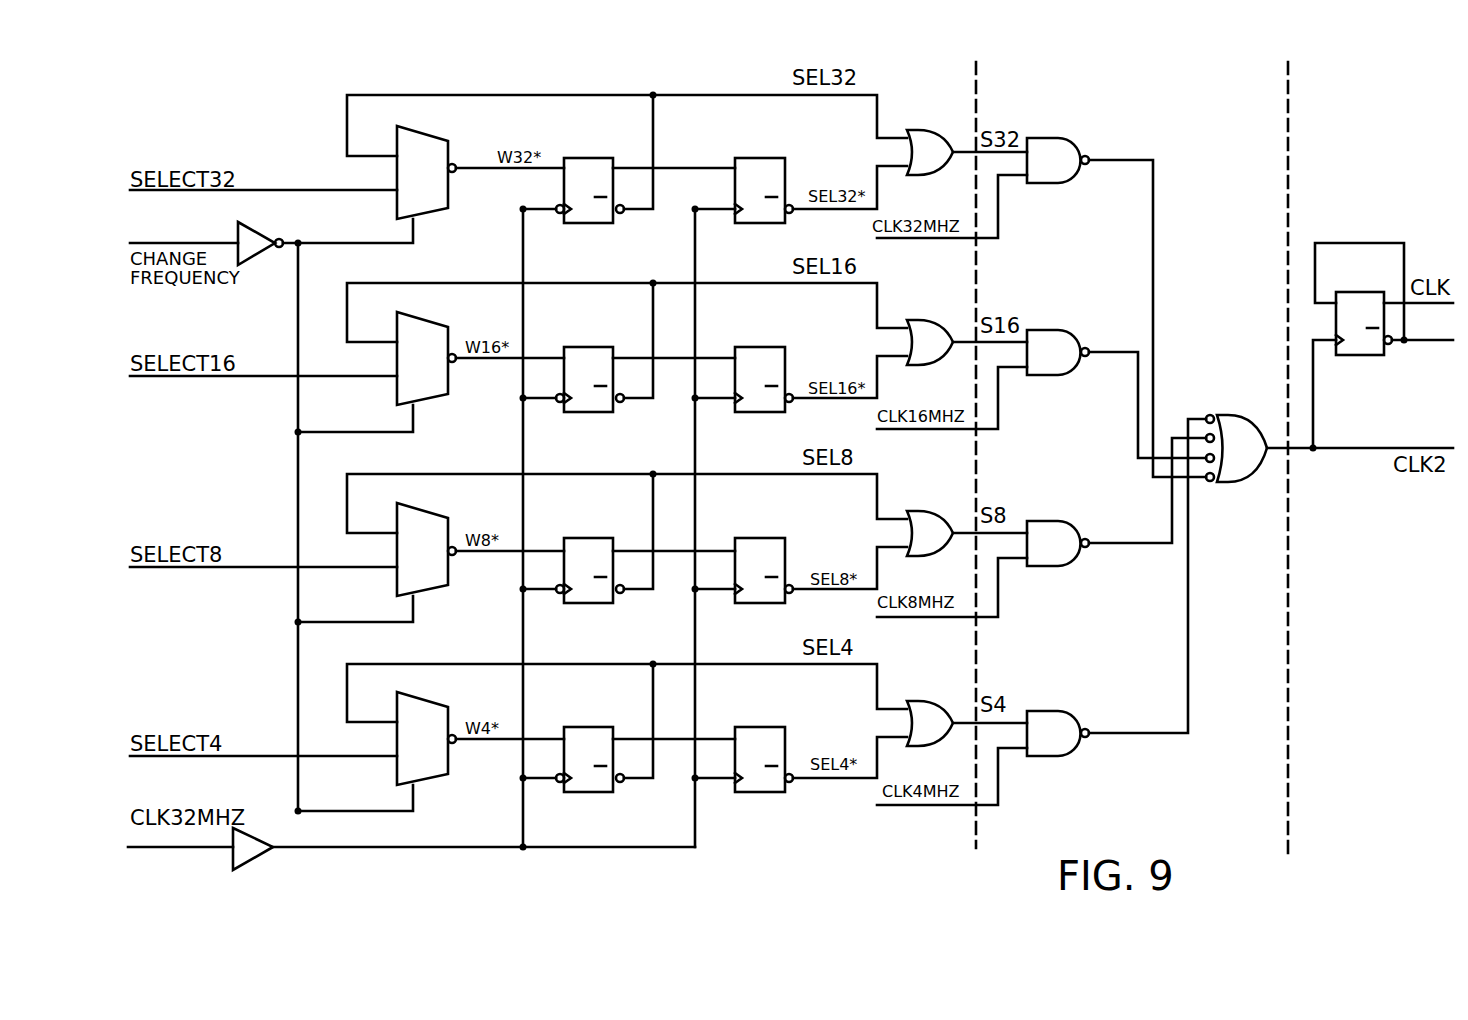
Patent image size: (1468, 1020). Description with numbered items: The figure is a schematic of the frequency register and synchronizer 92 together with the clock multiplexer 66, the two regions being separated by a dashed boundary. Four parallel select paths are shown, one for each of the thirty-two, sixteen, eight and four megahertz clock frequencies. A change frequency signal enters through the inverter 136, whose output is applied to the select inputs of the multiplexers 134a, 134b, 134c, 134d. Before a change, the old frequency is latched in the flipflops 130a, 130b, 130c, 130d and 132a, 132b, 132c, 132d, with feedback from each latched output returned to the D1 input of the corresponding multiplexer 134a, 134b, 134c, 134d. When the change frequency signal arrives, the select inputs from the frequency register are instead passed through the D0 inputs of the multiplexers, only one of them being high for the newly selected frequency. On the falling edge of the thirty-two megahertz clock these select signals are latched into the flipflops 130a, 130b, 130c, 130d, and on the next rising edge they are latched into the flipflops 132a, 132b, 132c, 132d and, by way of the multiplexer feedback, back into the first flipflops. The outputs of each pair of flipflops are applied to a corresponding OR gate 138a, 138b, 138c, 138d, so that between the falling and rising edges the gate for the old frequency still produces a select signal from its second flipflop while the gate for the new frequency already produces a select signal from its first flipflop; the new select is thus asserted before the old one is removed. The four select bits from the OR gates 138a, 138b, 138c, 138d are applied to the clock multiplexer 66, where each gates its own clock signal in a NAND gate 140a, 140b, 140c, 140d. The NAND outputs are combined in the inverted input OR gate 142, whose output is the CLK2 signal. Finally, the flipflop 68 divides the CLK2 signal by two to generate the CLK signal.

The inverter 136 is at (262, 227).
The multiplexer 134a is at (427, 131).
The multiplexer 134b is at (427, 318).
The multiplexer 134c is at (427, 509).
The multiplexer 134d is at (427, 697).
The flipflop 130a is at (606, 157).
The flipflop 130b is at (606, 346).
The flipflop 130c is at (606, 537).
The flipflop 130d is at (596, 726).
The flipflop 132a is at (757, 157).
The flipflop 132b is at (757, 346).
The flipflop 132c is at (752, 537).
The flipflop 132d is at (752, 726).
The OR gate 138a is at (933, 130).
The OR gate 138b is at (938, 320).
The OR gate 138c is at (937, 510).
The OR gate 138d is at (931, 700).
The NAND gate 140a is at (1061, 137).
The NAND gate 140b is at (1062, 329).
The NAND gate 140c is at (1061, 520).
The NAND gate 140d is at (1063, 710).
The inverted input OR gate 142 is at (1246, 427).
The flipflop 68 is at (1358, 357).
The frequency register and synchronizer 92 is at (953, 847).
The clock multiplexer 66 is at (1016, 847).